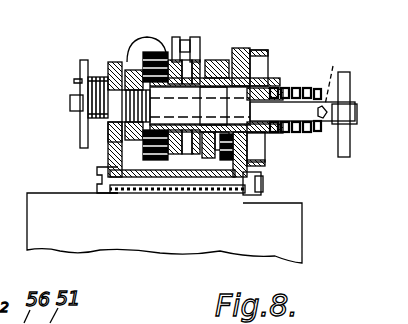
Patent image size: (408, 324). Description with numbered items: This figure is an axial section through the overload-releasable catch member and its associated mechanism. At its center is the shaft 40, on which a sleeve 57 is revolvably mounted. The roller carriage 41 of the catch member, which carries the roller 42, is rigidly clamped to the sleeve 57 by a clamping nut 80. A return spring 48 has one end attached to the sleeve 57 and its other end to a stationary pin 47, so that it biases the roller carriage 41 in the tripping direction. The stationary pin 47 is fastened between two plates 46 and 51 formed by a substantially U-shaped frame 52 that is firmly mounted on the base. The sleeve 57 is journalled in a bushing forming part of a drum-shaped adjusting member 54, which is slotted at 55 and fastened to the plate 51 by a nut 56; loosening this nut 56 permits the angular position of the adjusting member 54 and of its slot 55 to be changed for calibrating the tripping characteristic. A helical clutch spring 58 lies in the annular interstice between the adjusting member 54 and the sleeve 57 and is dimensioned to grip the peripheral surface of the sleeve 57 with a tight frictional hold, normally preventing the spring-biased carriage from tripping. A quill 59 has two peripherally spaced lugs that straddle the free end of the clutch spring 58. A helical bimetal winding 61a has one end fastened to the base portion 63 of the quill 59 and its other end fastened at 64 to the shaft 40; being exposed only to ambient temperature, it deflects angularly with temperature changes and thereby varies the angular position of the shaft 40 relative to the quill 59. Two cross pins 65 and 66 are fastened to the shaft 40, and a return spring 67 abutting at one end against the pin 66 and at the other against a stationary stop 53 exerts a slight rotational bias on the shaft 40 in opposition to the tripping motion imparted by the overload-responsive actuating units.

The shaft 40 is at (358, 113).
The roller carriage 41 is at (201, 49).
The roller 42 is at (186, 40).
The plate 46 is at (108, 156).
The stationary pin 47 is at (185, 186).
The return spring 48 is at (164, 52).
The plate 51 is at (242, 50).
The U-shaped frame 52 is at (146, 46).
The stationary stop 53 is at (98, 76).
The adjusting member 54 is at (262, 53).
The slot 55 is at (232, 168).
The nut 56 is at (208, 166).
The sleeve 57 is at (212, 95).
The helical clutch spring 58 is at (268, 83).
The quill 59 is at (290, 136).
The helical bimetal winding 61a is at (305, 135).
The base portion 63 is at (265, 140).
The fastening point 64 is at (334, 75).
The cross pin 65 is at (346, 138).
The cross pin 66 is at (80, 62).
The return spring 67 is at (82, 115).
The clamping nut 80 is at (108, 132).